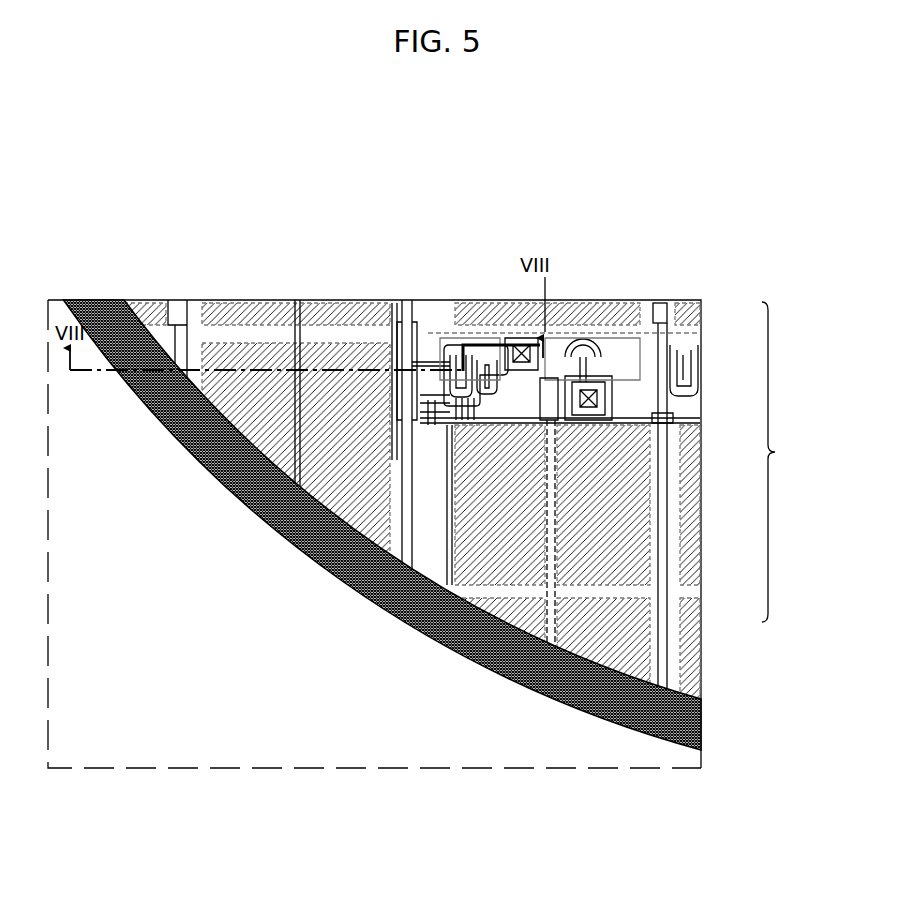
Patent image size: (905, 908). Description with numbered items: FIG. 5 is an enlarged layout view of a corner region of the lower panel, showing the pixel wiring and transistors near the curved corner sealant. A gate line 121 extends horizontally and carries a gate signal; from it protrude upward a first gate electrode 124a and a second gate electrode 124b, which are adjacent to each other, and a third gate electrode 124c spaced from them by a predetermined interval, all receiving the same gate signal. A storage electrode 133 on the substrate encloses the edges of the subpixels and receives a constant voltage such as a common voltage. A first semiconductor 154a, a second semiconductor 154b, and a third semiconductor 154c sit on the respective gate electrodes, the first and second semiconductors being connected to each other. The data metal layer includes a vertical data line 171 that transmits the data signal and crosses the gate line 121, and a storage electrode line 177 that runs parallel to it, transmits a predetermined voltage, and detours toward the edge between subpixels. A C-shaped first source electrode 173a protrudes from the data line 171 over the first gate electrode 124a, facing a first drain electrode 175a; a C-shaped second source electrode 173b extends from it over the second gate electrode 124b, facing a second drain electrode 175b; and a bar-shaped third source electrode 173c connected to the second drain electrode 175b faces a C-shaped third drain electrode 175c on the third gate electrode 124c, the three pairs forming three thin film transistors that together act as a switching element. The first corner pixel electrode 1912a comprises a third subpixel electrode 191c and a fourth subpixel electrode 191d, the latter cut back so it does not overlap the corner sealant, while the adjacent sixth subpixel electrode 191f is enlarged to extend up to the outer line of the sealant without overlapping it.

The gate line 121 is at (653, 380).
The first gate electrode 124a is at (458, 352).
The second gate electrode 124b is at (500, 345).
The third gate electrode 124c is at (618, 372).
The storage electrode 133 is at (650, 493).
The first semiconductor 154a is at (452, 356).
The second semiconductor 154b is at (472, 400).
The third semiconductor 154c is at (603, 357).
The data line 171 is at (445, 352).
The first source electrode 173a is at (468, 400).
The second source electrode 173b is at (470, 342).
The third source electrode 173c is at (553, 400).
The first drain electrode 175a is at (458, 396).
The second drain electrode 175b is at (452, 400).
The third drain electrode 175c is at (583, 350).
The storage electrode line 177 is at (650, 408).
The third subpixel electrode 191c is at (645, 312).
The fourth subpixel electrode 191d is at (633, 590).
The sixth subpixel electrode 191f is at (222, 337).
The first corner pixel electrode 1912a is at (801, 462).